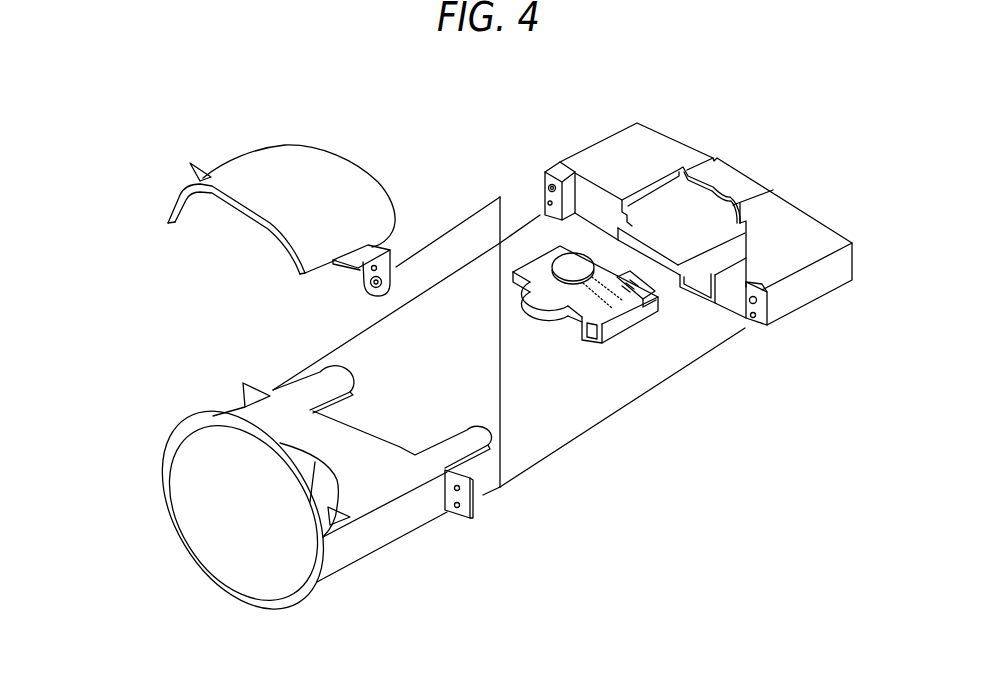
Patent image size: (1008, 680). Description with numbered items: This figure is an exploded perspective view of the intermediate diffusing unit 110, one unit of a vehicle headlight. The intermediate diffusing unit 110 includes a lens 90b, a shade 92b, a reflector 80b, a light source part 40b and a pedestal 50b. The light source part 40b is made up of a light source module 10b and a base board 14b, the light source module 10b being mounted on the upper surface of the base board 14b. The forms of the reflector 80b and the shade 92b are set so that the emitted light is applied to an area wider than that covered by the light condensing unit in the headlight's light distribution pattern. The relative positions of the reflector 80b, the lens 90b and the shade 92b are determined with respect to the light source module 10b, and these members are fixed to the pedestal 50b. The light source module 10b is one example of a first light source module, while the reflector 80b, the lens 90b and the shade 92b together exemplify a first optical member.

The intermediate diffusing unit 110 is at (120, 126).
The reflector 80b is at (283, 172).
The light source part 40b is at (575, 204).
The base board 14b is at (544, 246).
The light source module 10b is at (577, 246).
The pedestal 50b is at (808, 237).
The lens 90b is at (198, 460).
The shade 92b is at (340, 440).